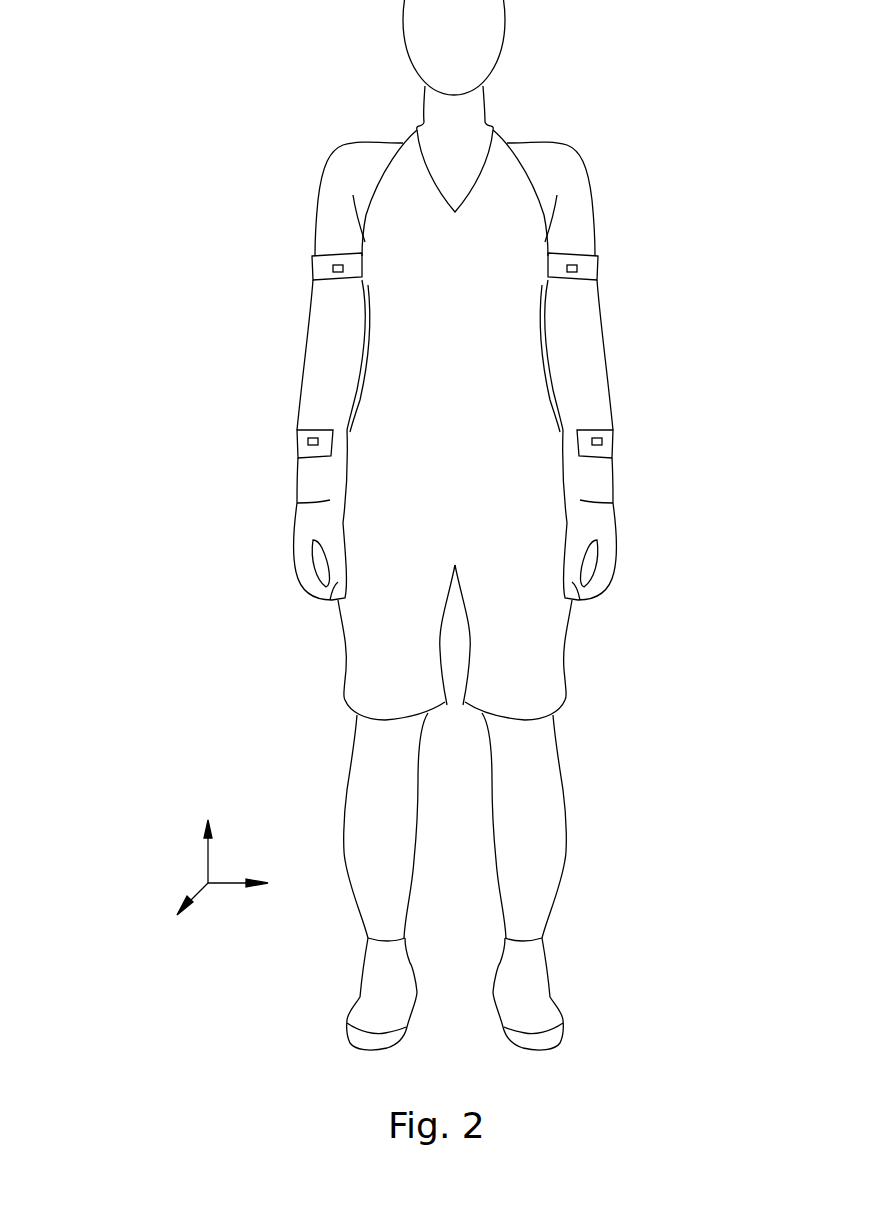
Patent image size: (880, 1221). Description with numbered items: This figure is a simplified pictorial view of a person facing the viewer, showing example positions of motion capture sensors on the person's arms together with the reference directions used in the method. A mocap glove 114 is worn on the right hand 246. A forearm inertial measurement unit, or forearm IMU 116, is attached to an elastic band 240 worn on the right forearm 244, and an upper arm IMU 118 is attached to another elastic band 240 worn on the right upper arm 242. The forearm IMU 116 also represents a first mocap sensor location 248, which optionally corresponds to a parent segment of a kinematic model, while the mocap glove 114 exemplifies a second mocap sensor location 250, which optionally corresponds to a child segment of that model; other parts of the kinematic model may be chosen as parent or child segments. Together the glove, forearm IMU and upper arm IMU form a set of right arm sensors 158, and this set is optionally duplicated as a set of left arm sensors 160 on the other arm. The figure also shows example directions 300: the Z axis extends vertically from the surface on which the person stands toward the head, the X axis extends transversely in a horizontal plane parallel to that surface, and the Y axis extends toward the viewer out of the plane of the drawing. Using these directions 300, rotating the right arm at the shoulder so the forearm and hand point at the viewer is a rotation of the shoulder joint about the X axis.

The mocap glove 114 is at (292, 539).
The forearm inertial measurement unit (IMU) 116 is at (308, 440).
The upper arm IMU 118 is at (330, 266).
The set of right arm sensors 158 is at (180, 391).
The set of left arm sensors 160 is at (680, 391).
The elastic band 240 is at (319, 254).
The right upper arm 242 is at (316, 213).
The right forearm 244 is at (297, 478).
The right hand 246 is at (268, 600).
The first mocap sensor location 248 is at (205, 265).
The second mocap sensor location 250 is at (195, 567).
The directions 300 is at (152, 765).